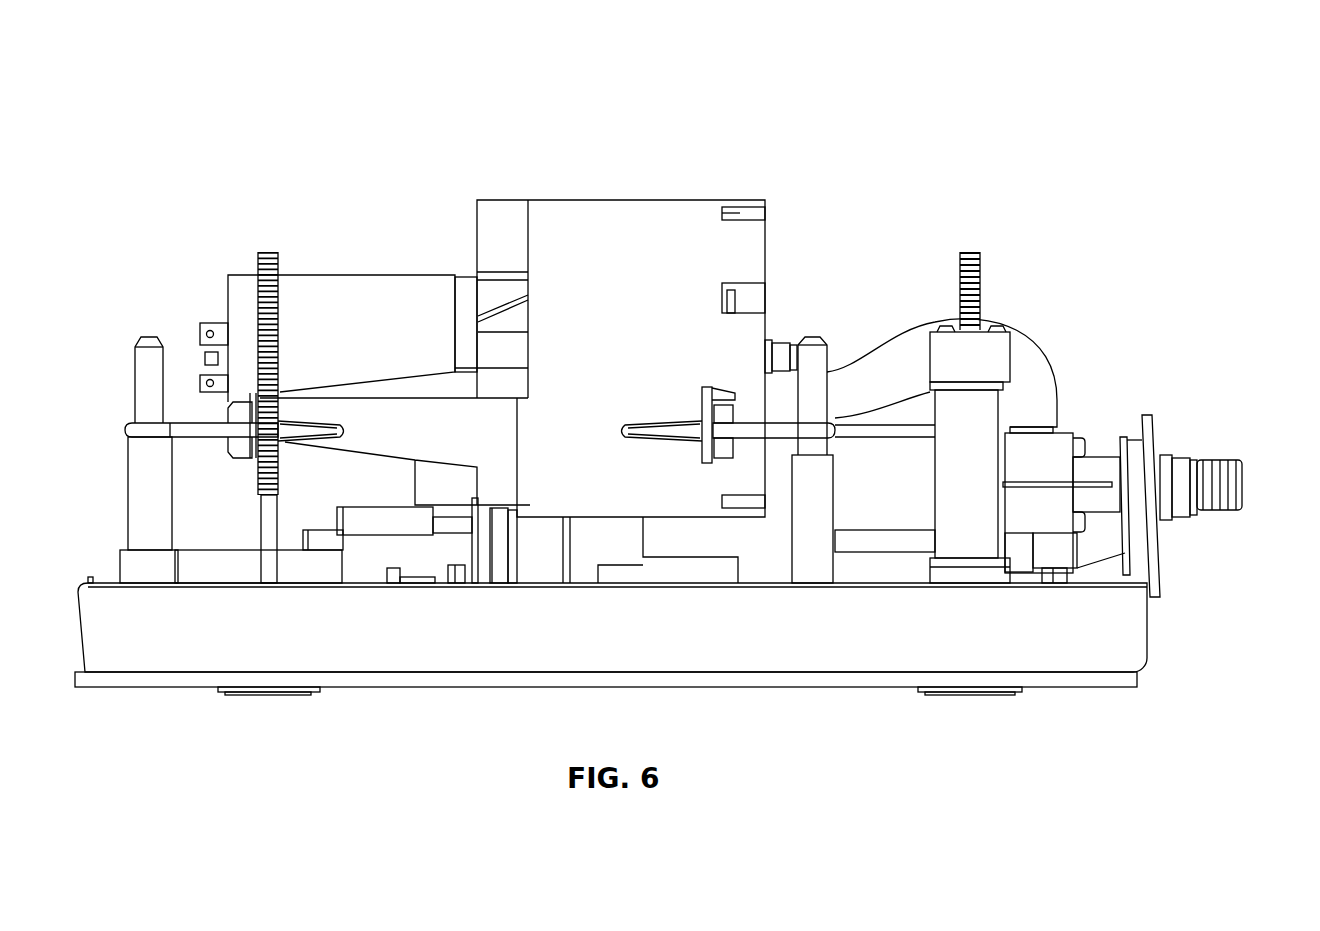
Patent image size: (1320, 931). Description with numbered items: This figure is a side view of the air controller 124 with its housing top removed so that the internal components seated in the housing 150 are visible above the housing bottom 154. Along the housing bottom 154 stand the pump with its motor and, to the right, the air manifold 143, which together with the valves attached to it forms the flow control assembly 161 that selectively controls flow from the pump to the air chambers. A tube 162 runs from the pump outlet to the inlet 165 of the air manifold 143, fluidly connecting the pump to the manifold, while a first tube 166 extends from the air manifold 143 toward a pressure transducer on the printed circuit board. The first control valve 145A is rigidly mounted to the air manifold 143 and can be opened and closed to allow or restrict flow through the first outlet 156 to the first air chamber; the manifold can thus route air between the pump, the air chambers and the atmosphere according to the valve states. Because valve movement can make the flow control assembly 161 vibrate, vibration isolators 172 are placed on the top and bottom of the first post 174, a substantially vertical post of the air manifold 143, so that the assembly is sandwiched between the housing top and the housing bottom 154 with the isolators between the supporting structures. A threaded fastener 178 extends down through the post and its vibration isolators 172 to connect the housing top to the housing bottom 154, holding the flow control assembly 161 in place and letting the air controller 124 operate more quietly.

The air controller 124 is at (177, 110).
The housing 150 is at (91, 692).
The housing bottom 154 is at (157, 680).
The first control valve 145A is at (870, 490).
The first tube 166 is at (1053, 575).
The vibration isolator 172 is at (930, 352).
The first post 174 is at (990, 487).
The inlet 165 is at (1032, 433).
The air manifold 143 is at (1070, 422).
The tube 162 is at (1033, 352).
The threaded fastener 178 is at (968, 252).
The flow control assembly 161 is at (1097, 429).
The first outlet 156 is at (1247, 490).